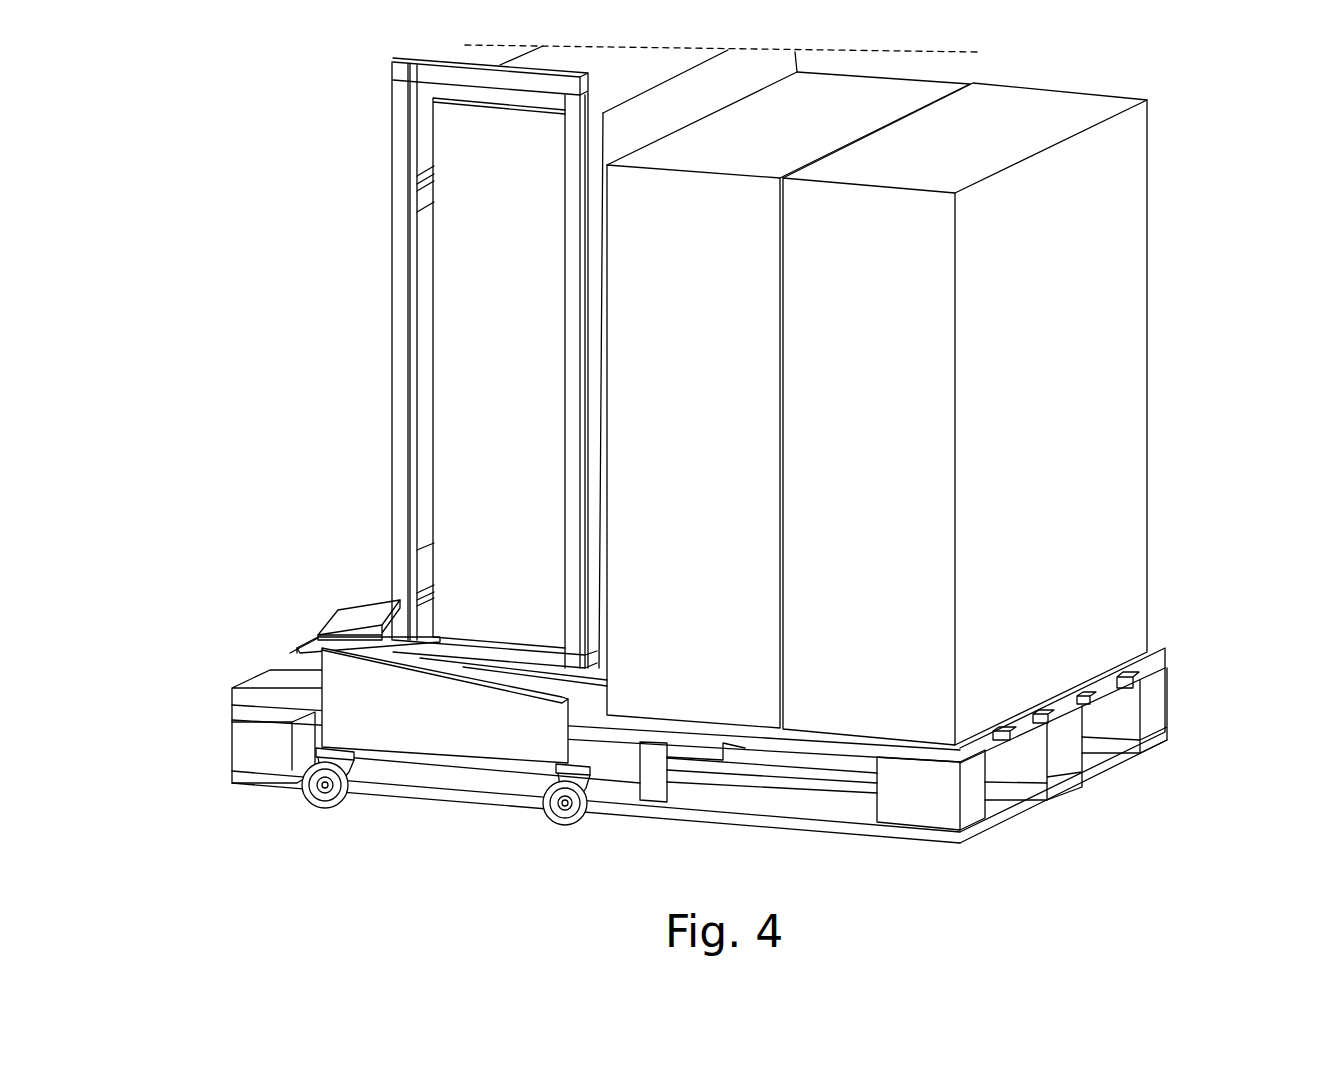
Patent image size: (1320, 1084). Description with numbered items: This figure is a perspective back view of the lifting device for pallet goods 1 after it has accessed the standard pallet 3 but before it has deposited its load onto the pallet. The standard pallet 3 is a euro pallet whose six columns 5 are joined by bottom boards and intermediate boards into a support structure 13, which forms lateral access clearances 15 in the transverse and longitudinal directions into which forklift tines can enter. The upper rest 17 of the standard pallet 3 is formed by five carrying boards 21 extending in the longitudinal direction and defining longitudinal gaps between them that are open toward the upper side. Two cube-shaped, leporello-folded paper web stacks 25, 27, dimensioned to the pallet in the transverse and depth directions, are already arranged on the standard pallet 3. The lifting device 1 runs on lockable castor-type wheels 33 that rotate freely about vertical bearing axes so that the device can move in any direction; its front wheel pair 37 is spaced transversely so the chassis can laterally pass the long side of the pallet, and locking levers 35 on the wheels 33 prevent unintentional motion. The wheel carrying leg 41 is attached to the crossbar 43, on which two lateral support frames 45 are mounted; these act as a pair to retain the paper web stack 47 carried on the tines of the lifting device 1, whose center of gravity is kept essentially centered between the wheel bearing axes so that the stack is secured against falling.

The lifting device for pallet goods 1 is at (264, 195).
The standard pallet 3 is at (751, 727).
The columns 5 is at (1160, 716).
The support structure 13 is at (1120, 750).
The lateral access clearances 15 is at (815, 790).
The rest 17 is at (245, 700).
The carrying boards 21 is at (300, 660).
The paper web stack 25 is at (853, 433).
The paper web stack 27 is at (695, 420).
The lockable wheels 33 is at (257, 794).
The locking levers 35 is at (306, 752).
The front wheel pair 37 is at (589, 827).
The wheel carrying leg 41 is at (460, 738).
The crossbar 43 is at (320, 637).
The lateral support frames 45 is at (400, 312).
The paper web stack 47 is at (485, 348).